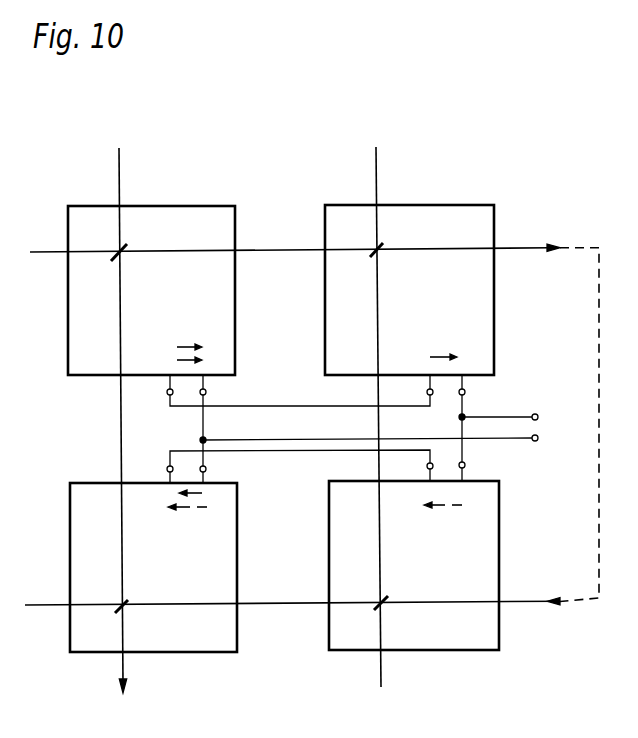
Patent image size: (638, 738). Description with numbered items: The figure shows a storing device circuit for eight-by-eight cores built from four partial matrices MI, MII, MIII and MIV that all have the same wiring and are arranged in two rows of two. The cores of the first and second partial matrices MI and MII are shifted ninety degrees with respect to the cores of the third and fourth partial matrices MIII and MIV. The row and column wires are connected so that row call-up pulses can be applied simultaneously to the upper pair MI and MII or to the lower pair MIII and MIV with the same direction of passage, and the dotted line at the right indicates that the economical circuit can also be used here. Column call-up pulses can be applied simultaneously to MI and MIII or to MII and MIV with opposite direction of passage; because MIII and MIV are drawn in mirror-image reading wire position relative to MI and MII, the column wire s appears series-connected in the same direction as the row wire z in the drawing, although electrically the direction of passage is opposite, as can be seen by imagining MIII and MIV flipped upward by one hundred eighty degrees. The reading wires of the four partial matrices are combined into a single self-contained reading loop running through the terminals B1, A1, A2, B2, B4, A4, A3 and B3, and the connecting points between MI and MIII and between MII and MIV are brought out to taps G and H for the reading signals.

The first partial matrix MI is at (154, 269).
The second partial matrix MII is at (463, 205).
The third partial matrix MIII is at (197, 642).
The fourth partial matrix MIV is at (448, 642).
The reading wire terminal of first partial matrix A1 is at (160, 387).
The reading wire terminal of first partial matrix B1 is at (214, 387).
The reading wire terminal of second partial matrix A2 is at (420, 387).
The reading wire terminal of second partial matrix B2 is at (473, 387).
The reading wire terminal of third partial matrix A3 is at (159, 472).
The reading wire terminal of third partial matrix B3 is at (214, 472).
The reading wire terminal of fourth partial matrix A4 is at (420, 469).
The reading wire terminal of fourth partial matrix B4 is at (473, 469).
The tap for reading signals G is at (509, 417).
The tap for reading signals H is at (379, 438).
The row wire z is at (195, 347).
The column wire s is at (195, 360).